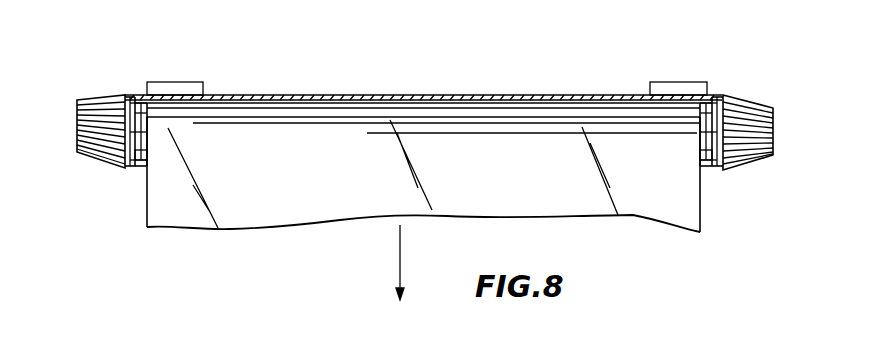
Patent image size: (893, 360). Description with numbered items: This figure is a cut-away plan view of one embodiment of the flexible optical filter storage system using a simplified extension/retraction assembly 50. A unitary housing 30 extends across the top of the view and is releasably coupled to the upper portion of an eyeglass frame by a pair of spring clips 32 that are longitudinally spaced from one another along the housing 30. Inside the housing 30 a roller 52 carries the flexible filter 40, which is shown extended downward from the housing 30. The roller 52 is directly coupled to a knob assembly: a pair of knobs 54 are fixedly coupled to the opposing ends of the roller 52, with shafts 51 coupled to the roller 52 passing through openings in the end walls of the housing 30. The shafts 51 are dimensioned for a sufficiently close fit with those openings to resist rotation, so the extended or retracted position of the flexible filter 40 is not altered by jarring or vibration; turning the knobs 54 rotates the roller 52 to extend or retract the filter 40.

The unitary housing 30 is at (450, 95).
The spring clips 32 is at (190, 84).
The flexible filter 40 is at (329, 169).
The extension/retraction assembly 50 is at (107, 176).
The shafts 51 is at (135, 102).
The roller 52 is at (140, 168).
The knobs 54 is at (103, 107).